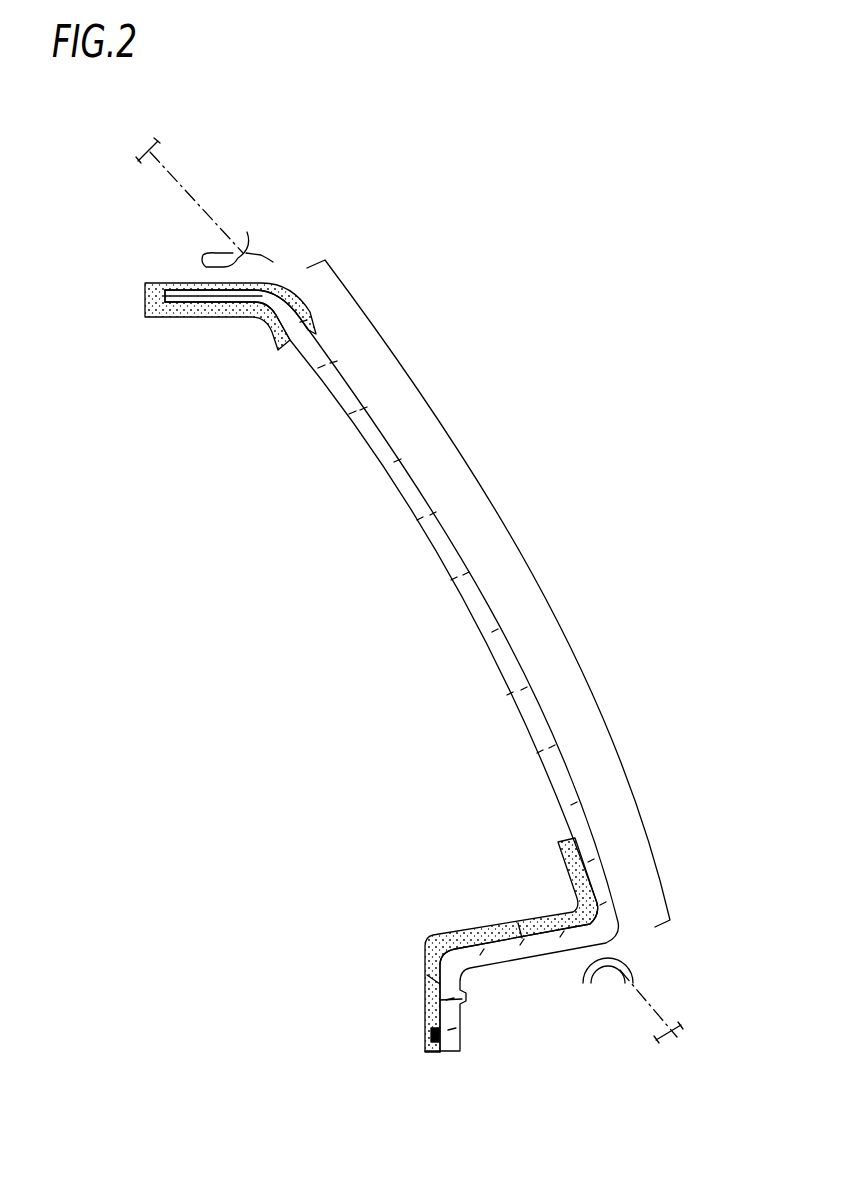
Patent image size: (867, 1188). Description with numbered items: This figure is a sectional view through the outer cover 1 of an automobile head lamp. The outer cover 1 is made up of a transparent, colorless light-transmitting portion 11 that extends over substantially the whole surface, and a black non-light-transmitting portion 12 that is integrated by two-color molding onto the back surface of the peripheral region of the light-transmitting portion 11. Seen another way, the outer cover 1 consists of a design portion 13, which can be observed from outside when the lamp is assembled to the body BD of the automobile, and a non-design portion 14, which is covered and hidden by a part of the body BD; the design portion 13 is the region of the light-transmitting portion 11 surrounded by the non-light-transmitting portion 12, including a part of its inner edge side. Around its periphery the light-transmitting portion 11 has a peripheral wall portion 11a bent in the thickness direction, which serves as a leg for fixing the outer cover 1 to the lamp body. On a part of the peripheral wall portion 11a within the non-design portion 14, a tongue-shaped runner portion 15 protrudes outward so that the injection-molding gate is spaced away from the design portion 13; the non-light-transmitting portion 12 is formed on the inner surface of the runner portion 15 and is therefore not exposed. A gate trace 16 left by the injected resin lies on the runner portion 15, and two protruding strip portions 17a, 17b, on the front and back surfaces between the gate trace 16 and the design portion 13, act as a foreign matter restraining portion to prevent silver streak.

The outer cover 1 is at (367, 270).
The light-transmitting portion 11 is at (457, 585).
The peripheral wall portion 11a is at (227, 295).
The non-light-transmitting portion 12 is at (183, 308).
The design portion 13 is at (519, 546).
The non-design portion 14 is at (145, 255).
The runner portion 15 is at (452, 1053).
The gate trace 16 is at (420, 1033).
The protruding strip portion 17a is at (440, 1000).
The protruding strip portion 17b is at (420, 977).
The body BD is at (207, 200).